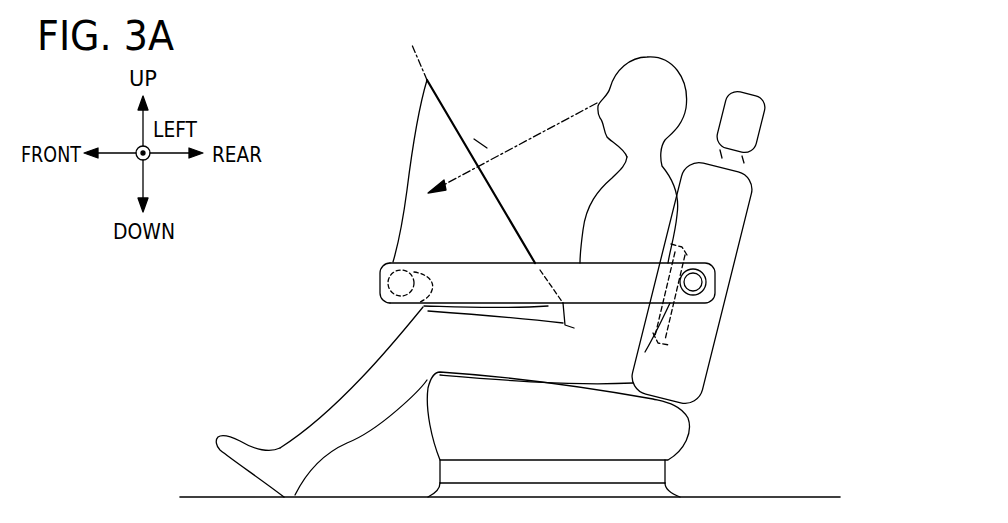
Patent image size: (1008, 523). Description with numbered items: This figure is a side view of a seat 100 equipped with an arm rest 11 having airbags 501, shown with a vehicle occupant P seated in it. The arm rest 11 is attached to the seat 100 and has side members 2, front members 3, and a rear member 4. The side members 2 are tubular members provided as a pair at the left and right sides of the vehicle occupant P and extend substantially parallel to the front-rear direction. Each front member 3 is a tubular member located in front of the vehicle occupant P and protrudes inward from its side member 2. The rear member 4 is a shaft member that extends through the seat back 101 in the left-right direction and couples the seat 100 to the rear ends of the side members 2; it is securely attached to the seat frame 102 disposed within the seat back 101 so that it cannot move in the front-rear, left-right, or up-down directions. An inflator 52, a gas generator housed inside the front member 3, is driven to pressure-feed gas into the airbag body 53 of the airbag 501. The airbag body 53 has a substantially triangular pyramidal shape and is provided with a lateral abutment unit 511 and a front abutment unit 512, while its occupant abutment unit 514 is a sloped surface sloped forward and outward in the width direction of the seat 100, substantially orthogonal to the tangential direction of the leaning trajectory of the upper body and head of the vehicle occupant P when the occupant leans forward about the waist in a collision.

The seat 100 is at (790, 124).
The seat back 101 is at (746, 197).
The seat frame 102 is at (668, 326).
The rear member 4 is at (716, 281).
The arm rest 11 is at (365, 263).
The front member 3 is at (380, 282).
The airbag 501 is at (326, 142).
The airbag body 53 is at (413, 151).
The inflator 52 is at (379, 262).
The front abutment unit 512 is at (384, 304).
The lateral abutment unit 511 is at (482, 313).
The occupant abutment unit 514 is at (444, 90).
The side member 2 is at (556, 272).
The vehicle occupant P is at (644, 55).